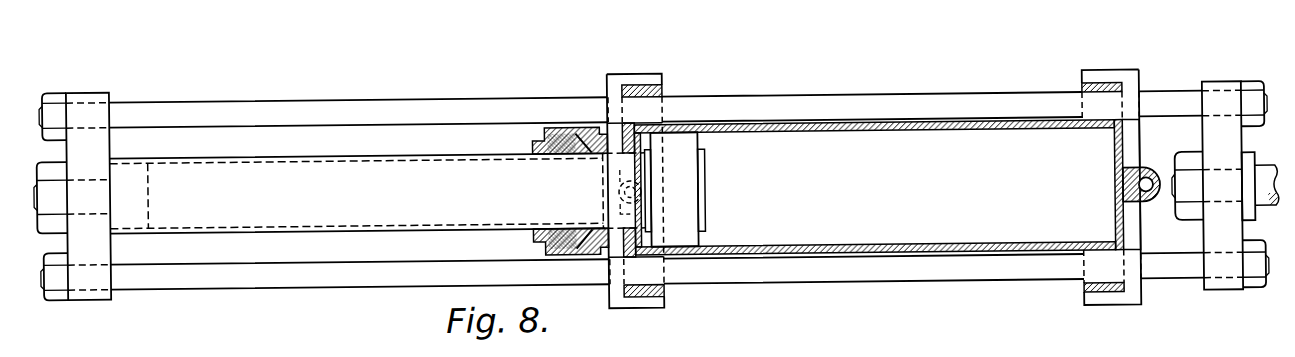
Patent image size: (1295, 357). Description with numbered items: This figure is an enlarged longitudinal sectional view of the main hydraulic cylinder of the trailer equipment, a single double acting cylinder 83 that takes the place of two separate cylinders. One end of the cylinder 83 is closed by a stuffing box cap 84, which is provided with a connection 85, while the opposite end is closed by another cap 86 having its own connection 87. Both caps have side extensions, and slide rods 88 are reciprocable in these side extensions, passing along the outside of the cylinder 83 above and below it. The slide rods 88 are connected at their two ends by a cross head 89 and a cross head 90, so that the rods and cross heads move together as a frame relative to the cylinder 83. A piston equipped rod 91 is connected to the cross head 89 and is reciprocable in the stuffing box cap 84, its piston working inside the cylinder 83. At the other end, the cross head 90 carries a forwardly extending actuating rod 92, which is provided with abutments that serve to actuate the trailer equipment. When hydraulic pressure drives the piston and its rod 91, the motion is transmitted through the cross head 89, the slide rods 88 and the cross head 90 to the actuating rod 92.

The cylinder 83 is at (802, 135).
The stuffing box cap 84 is at (620, 248).
The connection 85 is at (603, 191).
The cap 86 is at (1115, 225).
The connection 87 is at (1148, 185).
The slide rods 88 is at (455, 110).
The cross head 89 is at (91, 104).
The cross head 90 is at (1233, 149).
The piston equipped rod 91 is at (378, 193).
The actuating rod 92 is at (1262, 206).